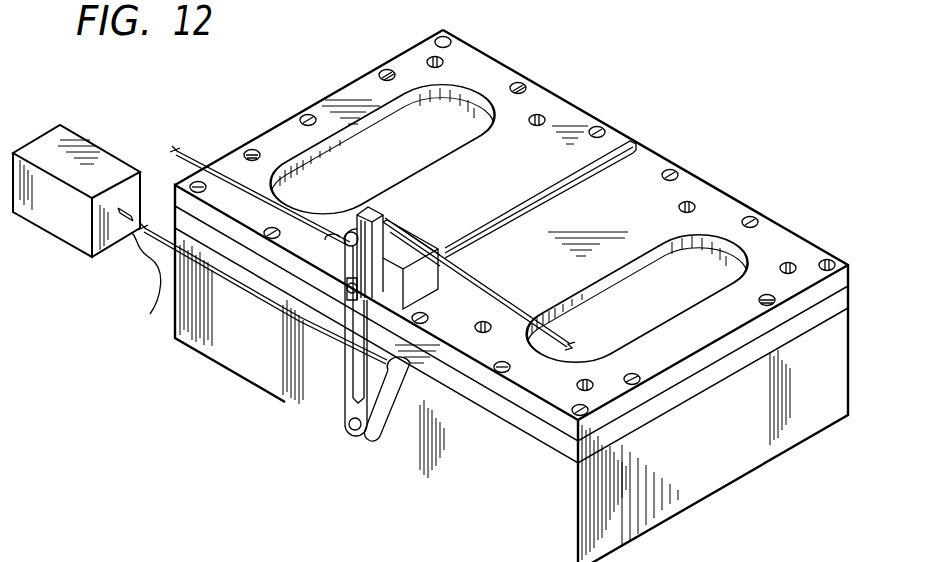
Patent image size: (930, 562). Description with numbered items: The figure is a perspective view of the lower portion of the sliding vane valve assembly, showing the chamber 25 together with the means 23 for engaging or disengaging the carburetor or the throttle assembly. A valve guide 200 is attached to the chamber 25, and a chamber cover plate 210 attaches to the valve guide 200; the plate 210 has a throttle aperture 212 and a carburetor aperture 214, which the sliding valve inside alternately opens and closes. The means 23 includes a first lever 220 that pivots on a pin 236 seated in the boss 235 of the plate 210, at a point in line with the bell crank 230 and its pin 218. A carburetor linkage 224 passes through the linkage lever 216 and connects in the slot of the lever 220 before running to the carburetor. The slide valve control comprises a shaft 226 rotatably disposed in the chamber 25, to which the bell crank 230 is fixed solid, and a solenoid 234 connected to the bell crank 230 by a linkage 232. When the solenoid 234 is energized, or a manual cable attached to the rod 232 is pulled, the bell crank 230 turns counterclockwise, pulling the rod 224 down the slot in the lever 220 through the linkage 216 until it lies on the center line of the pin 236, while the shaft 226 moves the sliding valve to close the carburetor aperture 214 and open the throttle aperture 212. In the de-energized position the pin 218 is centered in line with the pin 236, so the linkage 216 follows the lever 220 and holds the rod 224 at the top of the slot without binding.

The valve guide 200 is at (825, 310).
The chamber cover plate 210 is at (637, 216).
The throttle aperture 212 is at (688, 263).
The carburetor aperture 214 is at (457, 127).
The linkage lever 216 is at (345, 262).
The bell crank pin 218 is at (348, 345).
The first lever 220 is at (367, 207).
The carburetor linkage 224 is at (200, 160).
The shaft 226 is at (380, 440).
The bell crank means 230 is at (351, 398).
The linkage 232 is at (345, 243).
The solenoid 234 is at (102, 172).
The boss 235 is at (446, 208).
The pin 236 is at (470, 235).
The chamber 25 is at (702, 475).
The means interconnecting the carburetor and throttle assembly 23 is at (229, 556).